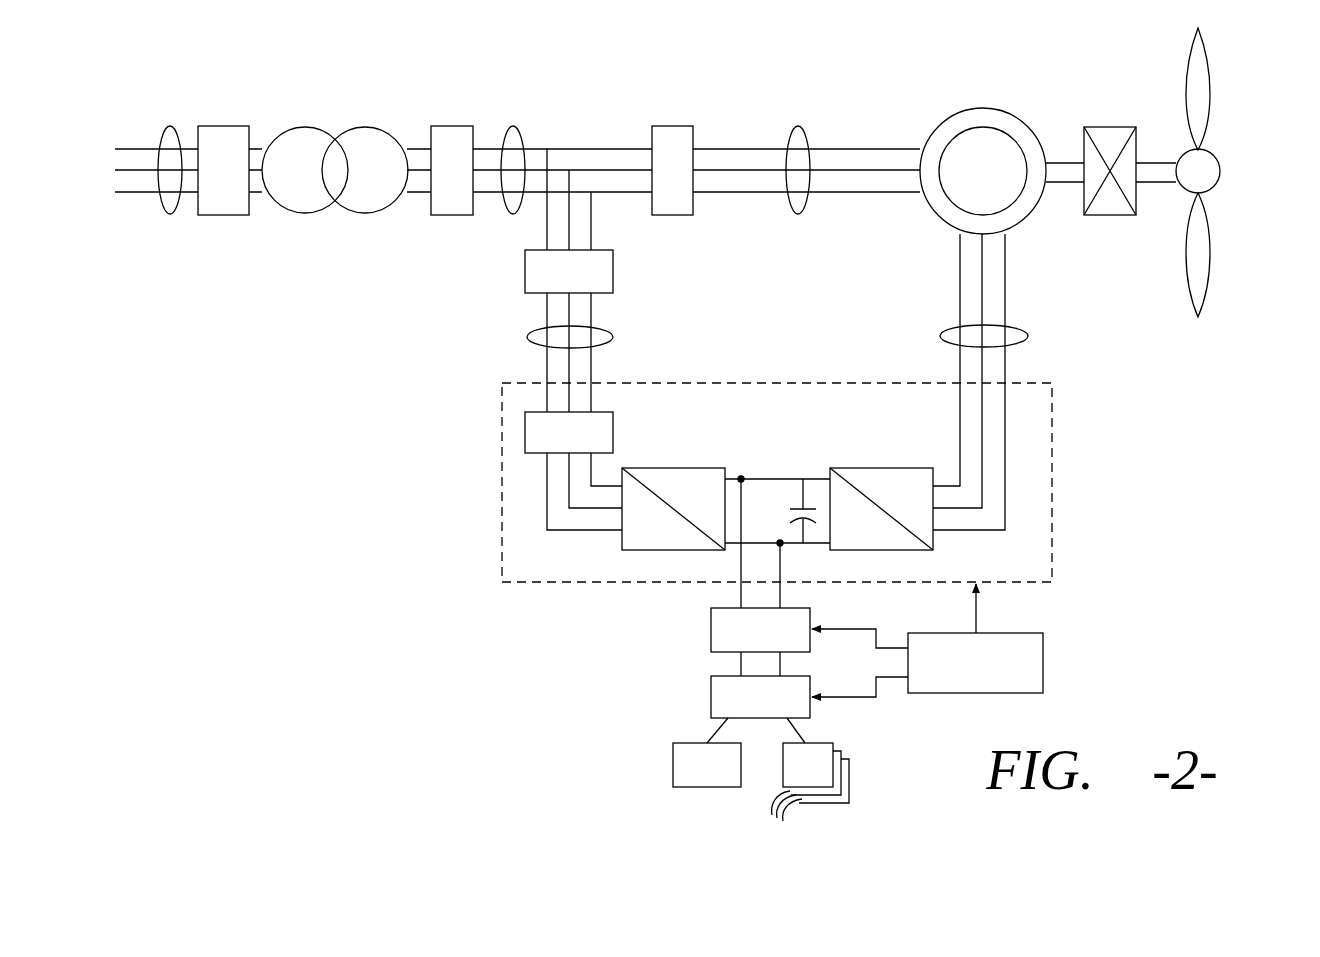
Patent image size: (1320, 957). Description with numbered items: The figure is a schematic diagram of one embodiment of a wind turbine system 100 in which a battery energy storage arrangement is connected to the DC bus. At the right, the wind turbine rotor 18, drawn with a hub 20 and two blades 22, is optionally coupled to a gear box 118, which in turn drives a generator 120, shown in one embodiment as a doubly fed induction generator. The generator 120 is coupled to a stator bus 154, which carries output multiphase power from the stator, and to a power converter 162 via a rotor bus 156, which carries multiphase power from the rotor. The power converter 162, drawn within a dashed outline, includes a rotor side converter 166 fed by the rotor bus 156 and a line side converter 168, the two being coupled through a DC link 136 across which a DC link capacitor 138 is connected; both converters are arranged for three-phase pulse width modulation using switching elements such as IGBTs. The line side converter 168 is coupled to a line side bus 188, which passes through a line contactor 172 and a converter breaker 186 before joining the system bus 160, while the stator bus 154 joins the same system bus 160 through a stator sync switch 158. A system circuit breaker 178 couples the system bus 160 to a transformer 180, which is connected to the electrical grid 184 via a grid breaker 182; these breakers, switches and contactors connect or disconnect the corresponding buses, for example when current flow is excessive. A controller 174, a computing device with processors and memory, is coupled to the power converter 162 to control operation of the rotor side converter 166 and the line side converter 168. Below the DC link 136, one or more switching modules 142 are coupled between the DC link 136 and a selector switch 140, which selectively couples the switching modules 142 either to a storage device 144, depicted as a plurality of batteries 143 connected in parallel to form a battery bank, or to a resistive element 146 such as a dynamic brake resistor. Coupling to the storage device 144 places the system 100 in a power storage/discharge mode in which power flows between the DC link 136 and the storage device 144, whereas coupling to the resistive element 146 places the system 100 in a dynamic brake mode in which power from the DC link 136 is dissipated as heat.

The rotor 18 is at (1244, 186).
The hub 20 is at (1222, 165).
The rotor blade 22 is at (1210, 85).
The wind turbine system 100 is at (373, 520).
The gear box 118 is at (1108, 127).
The generator 120 is at (980, 108).
The DC link 136 is at (748, 479).
The DC link capacitor 138 is at (793, 512).
The selector switch 140 is at (738, 710).
The switching module 142 is at (760, 565).
The batteries 143 is at (762, 812).
The storage device 144 is at (852, 767).
The resistive element 146 is at (685, 779).
The stator bus 154 is at (797, 127).
The rotor bus 156 is at (1030, 336).
The stator sync switch 158 is at (670, 126).
The system bus 160 is at (512, 127).
The power converter 162 is at (748, 454).
The rotor side converter 166 is at (935, 540).
The line side converter 168 is at (620, 540).
The line contactor 172 is at (525, 437).
The controller 174 is at (953, 676).
The system circuit breaker 178 is at (448, 126).
The transformer 180 is at (362, 127).
The grid breaker 182 is at (218, 126).
The electrical grid 184 is at (170, 127).
The converter breaker 186 is at (525, 277).
The line side bus 188 is at (535, 345).